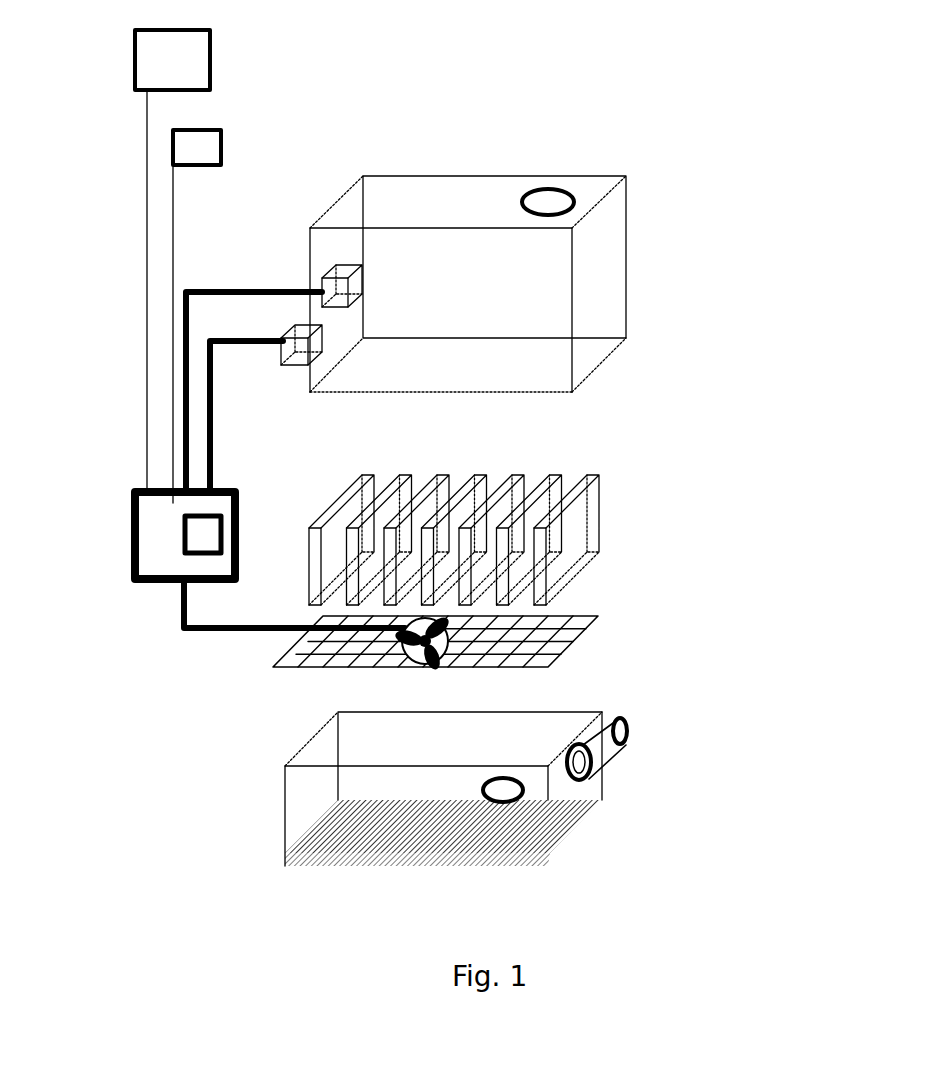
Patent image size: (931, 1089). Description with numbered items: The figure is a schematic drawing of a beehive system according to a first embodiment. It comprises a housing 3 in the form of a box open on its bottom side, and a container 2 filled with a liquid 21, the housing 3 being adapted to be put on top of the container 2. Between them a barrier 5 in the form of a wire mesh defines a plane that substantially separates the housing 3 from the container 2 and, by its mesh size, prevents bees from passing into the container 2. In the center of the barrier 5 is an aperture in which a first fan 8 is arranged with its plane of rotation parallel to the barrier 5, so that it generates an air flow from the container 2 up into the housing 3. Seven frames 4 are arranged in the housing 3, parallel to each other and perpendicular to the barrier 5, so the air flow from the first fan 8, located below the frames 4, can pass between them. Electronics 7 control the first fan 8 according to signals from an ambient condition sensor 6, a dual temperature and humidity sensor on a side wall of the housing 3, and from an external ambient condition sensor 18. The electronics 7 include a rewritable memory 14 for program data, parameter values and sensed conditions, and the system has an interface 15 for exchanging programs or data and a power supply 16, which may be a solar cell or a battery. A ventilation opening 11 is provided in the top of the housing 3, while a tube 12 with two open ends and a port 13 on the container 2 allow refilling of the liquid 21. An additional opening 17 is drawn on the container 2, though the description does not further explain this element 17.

The container 2 is at (310, 792).
The housing 3 is at (597, 265).
The frames 4 is at (585, 515).
The barrier 5 is at (550, 642).
The ambient condition sensor 6 is at (334, 290).
The electronics 7 is at (167, 582).
The first fan 8 is at (410, 652).
The ventilation opening 11 is at (548, 203).
The tube 12 is at (626, 724).
The port 13 is at (585, 783).
The rewritable memory 14 is at (210, 530).
The interface 15 is at (207, 154).
The power supply 16 is at (197, 79).
The opening in lower housing 17 is at (510, 793).
The external ambient condition sensor 18 is at (298, 353).
The liquid 21 is at (562, 828).